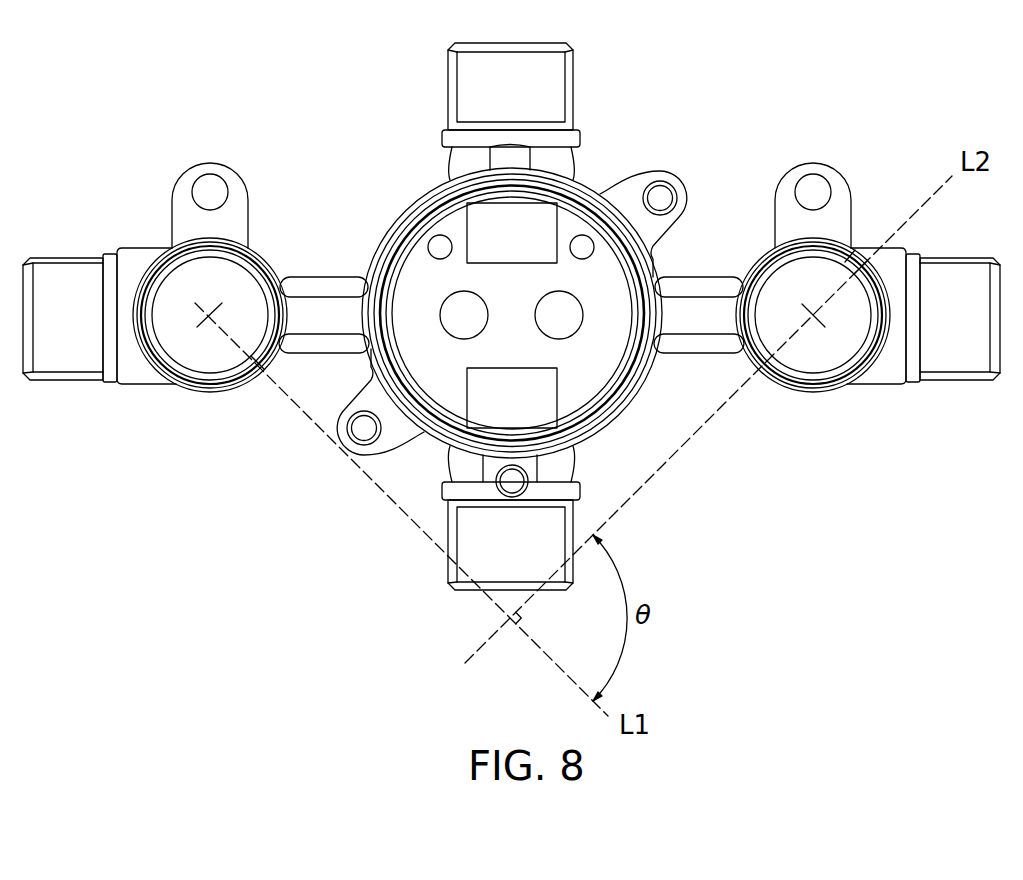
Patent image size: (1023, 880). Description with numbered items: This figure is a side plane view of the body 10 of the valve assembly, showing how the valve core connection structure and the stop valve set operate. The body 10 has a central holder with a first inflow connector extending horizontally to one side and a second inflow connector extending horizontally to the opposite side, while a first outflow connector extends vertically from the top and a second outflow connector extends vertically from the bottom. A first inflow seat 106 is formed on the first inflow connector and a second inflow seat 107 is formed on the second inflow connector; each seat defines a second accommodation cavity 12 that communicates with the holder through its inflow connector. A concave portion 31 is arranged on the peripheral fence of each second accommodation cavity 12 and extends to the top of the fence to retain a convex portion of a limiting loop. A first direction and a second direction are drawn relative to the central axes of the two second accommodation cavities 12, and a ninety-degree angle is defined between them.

The body 10 is at (511, 316).
The second accommodation cavity 12 is at (235, 280).
The concave portion 31 is at (250, 370).
The first inflow seat 106 is at (187, 385).
The second inflow seat 107 is at (840, 388).